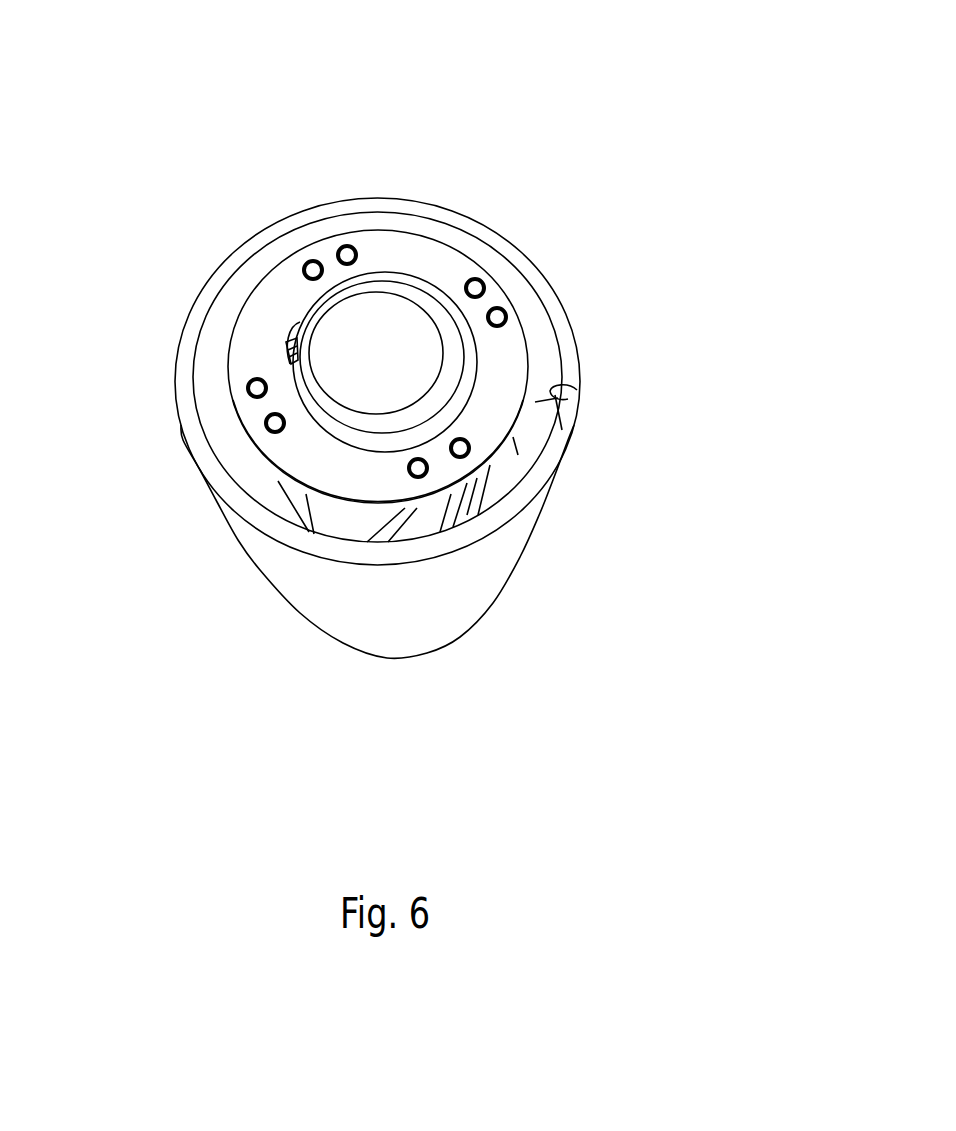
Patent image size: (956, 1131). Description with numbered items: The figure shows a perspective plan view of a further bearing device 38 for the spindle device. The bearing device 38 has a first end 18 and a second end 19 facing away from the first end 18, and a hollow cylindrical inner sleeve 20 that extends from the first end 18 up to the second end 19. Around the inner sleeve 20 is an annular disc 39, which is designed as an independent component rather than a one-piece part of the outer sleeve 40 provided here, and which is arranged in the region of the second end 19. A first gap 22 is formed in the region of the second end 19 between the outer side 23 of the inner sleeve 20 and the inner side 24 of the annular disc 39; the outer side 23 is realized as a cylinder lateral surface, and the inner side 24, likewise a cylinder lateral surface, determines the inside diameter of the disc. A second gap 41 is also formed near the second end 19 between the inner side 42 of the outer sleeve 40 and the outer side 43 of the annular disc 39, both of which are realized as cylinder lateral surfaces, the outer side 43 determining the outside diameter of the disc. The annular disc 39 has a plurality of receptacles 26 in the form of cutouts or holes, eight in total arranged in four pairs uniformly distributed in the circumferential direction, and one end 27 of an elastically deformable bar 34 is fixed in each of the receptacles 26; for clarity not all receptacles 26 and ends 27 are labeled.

The first end 18 is at (455, 660).
The second end 19 is at (219, 228).
The inner sleeve 20 is at (400, 292).
The first gap 22 is at (482, 344).
The outer side 23 is at (287, 362).
The inner side 24 is at (302, 334).
The receptacles 26 is at (305, 240).
The end 27 is at (246, 390).
The elastically deformable bar 34 is at (295, 512).
The bearing device 38 is at (538, 110).
The annular disc 39 is at (508, 370).
The outer sleeve 40 is at (473, 575).
The second gap 41 is at (547, 421).
The inner side 42 is at (577, 390).
The outer side 43 is at (516, 439).